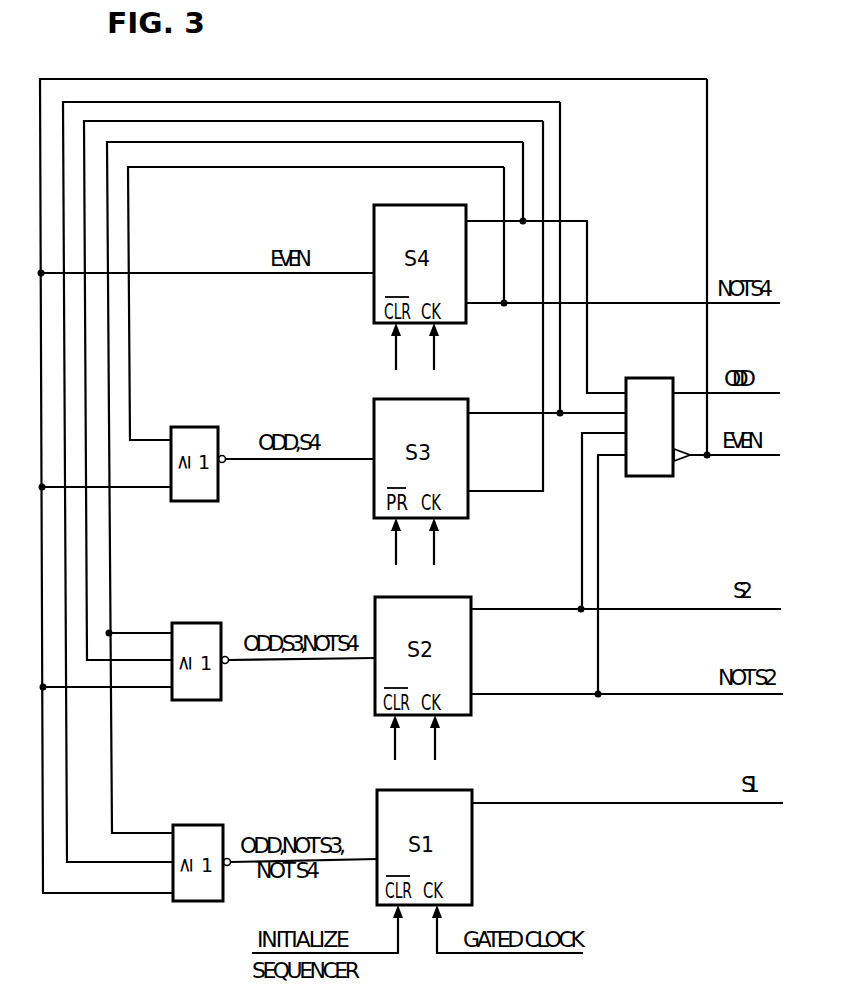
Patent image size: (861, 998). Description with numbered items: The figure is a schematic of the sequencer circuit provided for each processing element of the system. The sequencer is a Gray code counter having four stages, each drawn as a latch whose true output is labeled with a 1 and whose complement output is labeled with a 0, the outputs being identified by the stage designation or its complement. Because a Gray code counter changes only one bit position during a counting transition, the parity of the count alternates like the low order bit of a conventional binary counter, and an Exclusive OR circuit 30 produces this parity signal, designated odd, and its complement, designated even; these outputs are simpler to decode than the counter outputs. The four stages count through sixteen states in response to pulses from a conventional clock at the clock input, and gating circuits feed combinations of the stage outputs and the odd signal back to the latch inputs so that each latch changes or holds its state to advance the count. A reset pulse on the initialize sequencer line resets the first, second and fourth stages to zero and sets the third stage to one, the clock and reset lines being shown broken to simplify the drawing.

The Exclusive OR circuit 30 is at (660, 470).
The true (Q) output of flip-flop 1 is at (617, 515).
The complement (Q-bar) output of flip-flop 0 is at (616, 414).